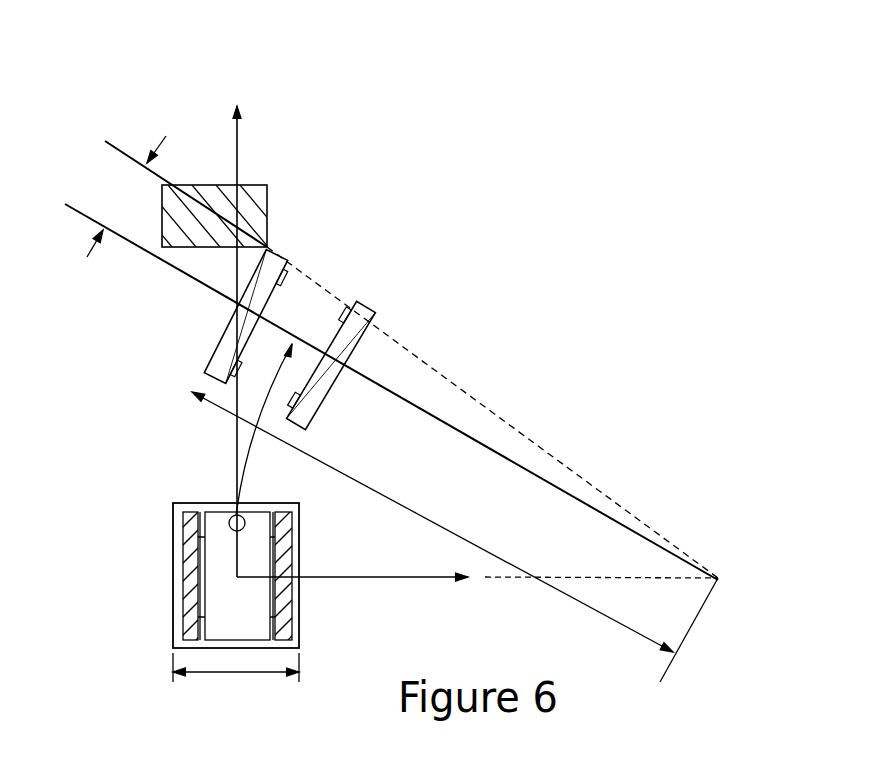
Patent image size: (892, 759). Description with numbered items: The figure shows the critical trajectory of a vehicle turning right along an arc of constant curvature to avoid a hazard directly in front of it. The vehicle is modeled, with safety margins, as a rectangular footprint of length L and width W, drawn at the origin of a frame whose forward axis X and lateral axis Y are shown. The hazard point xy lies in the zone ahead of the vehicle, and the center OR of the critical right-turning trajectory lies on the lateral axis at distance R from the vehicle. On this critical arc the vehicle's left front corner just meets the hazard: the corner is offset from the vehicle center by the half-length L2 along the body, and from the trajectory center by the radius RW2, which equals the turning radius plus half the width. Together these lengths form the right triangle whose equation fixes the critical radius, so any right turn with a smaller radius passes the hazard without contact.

The X axis X is at (259, 334).
The Y axis Y is at (477, 612).
The half vehicle length L/2 L2 is at (382, 358).
The hazard point (x, y) xy is at (248, 216).
The radius R+W/2 RW2 is at (455, 537).
The center (0, R) of critical right-turning trajectory OR is at (543, 437).
The vehicle footprint length L is at (167, 503).
The vehicle footprint width W is at (236, 688).